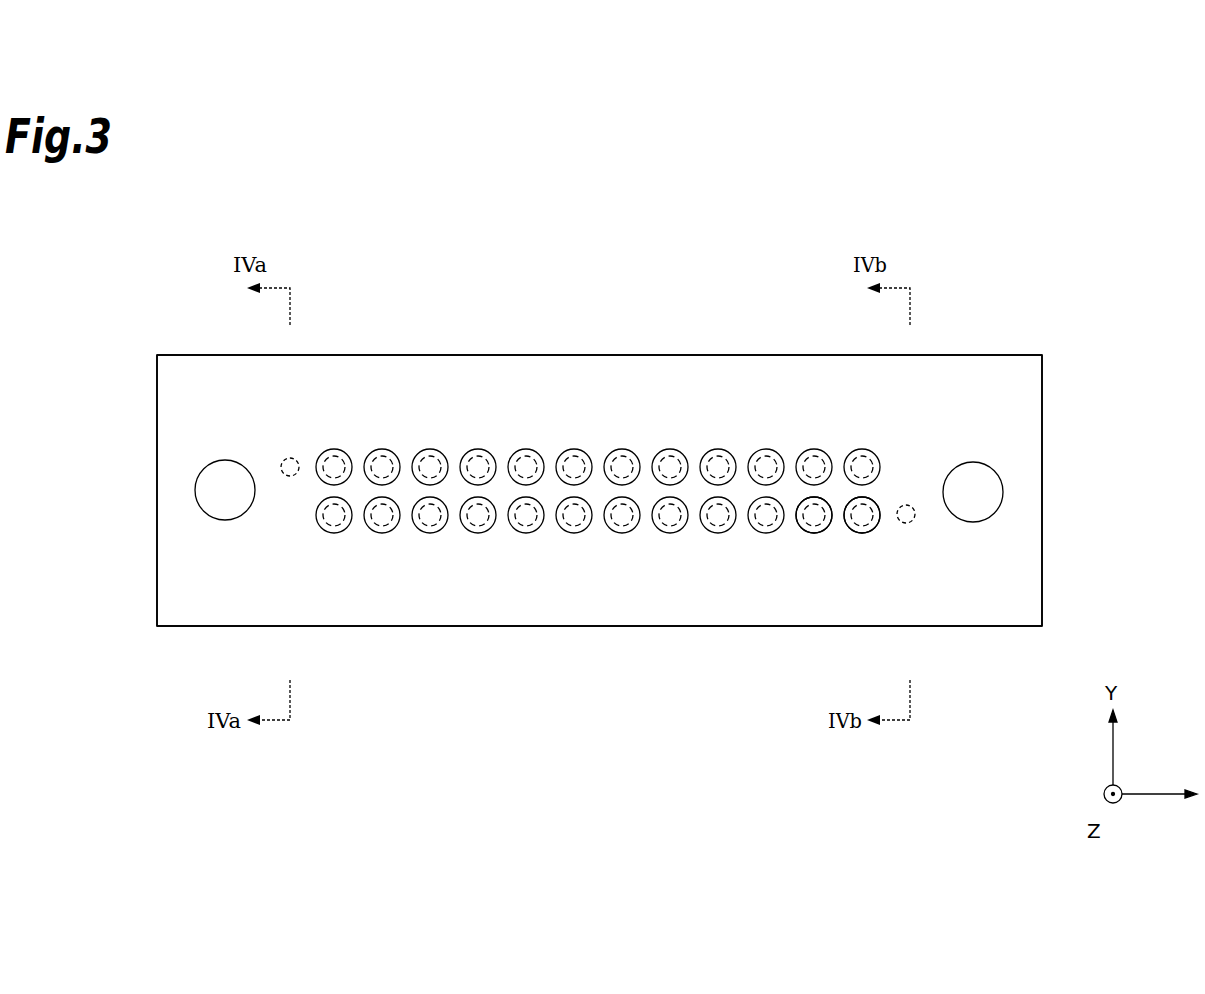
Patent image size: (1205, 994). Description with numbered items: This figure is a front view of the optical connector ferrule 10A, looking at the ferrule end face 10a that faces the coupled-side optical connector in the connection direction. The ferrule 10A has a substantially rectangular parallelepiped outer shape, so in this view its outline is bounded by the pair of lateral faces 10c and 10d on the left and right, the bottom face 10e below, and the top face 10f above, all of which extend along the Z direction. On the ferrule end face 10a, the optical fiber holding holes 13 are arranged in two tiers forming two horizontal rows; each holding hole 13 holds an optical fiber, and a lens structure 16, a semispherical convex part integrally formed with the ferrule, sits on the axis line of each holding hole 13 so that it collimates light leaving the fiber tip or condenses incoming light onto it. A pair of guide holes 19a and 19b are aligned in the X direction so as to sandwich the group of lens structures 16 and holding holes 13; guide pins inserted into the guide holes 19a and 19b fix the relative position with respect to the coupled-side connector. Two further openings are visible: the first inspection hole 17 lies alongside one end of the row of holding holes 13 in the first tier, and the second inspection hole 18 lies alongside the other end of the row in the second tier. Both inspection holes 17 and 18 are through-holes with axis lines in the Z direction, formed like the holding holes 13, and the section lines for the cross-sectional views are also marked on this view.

The ferrule 10A is at (1002, 352).
The ferrule end face 10a is at (790, 395).
The lateral face 10c is at (157, 568).
The lateral face 10d is at (1042, 558).
The bottom face 10e is at (553, 626).
The top face 10f is at (614, 355).
The optical fiber holding hole 13 is at (868, 497).
The lens structure 16 is at (866, 532).
The first inspection hole 17 is at (290, 458).
The second inspection hole 18 is at (906, 525).
The guide hole 19a is at (210, 517).
The guide hole 19b is at (976, 520).